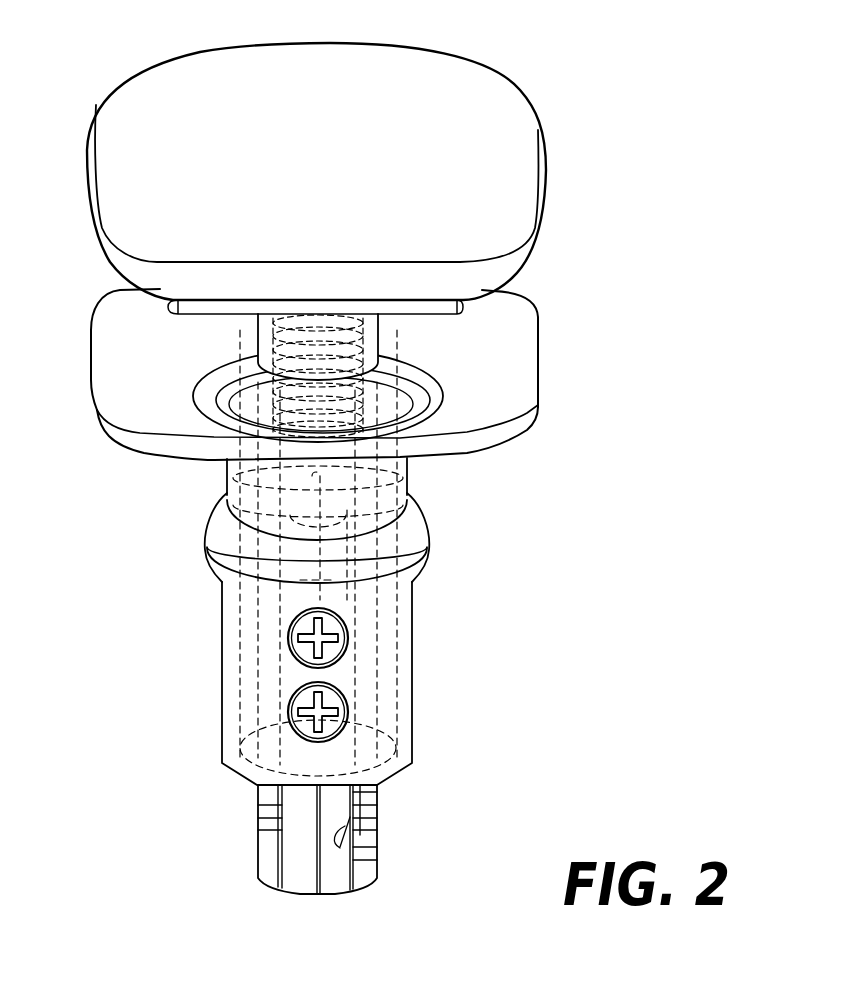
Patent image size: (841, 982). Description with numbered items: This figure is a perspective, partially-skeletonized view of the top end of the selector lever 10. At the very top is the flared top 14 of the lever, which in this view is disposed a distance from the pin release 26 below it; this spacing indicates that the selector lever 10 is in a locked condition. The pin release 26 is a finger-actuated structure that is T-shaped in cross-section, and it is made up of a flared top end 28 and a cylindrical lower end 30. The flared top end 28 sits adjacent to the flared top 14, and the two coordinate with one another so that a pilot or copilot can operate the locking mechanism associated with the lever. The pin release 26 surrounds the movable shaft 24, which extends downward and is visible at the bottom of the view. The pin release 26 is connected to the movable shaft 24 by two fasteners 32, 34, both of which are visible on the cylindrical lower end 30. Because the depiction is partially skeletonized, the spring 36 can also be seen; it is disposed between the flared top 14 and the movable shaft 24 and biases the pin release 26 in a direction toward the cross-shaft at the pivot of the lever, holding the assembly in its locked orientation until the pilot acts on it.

The selector lever 10 is at (436, 468).
The flared top 14 is at (513, 126).
The movable shaft 24 is at (333, 840).
The pin release 26 is at (540, 392).
The flared top end 28 is at (500, 448).
The cylindrical lower end 30 is at (412, 765).
The fastener 32 is at (349, 644).
The fastener 34 is at (349, 717).
The spring 36 is at (347, 363).